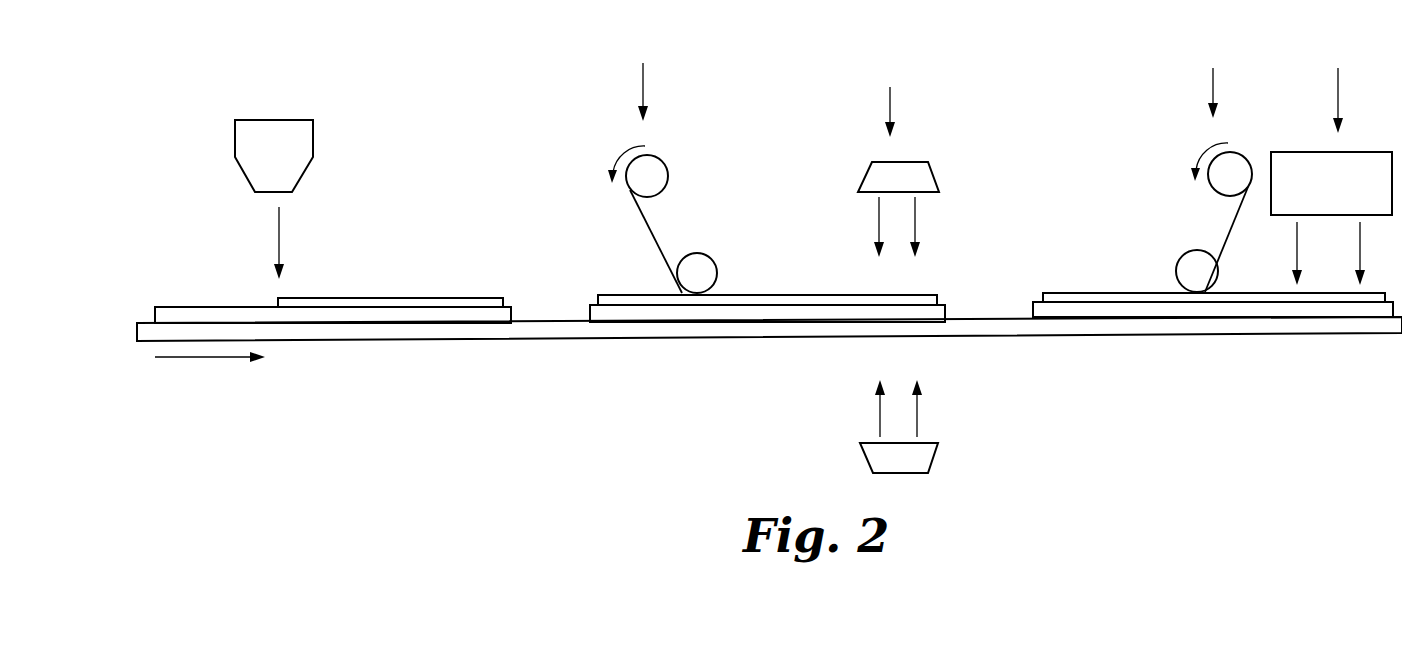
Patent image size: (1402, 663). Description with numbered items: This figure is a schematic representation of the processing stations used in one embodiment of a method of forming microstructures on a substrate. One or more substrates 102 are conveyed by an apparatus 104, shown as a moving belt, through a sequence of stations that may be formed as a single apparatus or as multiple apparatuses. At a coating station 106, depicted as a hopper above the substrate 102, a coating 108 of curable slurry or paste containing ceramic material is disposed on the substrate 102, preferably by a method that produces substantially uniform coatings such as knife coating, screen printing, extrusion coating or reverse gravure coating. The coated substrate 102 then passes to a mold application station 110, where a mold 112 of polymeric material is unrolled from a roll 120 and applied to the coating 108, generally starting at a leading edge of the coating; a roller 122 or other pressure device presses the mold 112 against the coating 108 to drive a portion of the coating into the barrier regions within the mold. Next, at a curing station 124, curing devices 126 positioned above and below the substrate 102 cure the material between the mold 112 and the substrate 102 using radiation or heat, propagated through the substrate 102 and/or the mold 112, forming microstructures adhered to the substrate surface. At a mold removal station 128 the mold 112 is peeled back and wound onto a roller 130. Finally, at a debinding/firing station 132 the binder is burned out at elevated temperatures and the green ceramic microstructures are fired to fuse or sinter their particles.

The substrate 102 is at (182, 307).
The apparatus 104 is at (397, 341).
The coating station 106 is at (283, 120).
The coating 108 is at (395, 298).
The mold application station 110 is at (644, 77).
The mold 112 is at (652, 225).
The roll 120 is at (668, 167).
The roller 122 is at (715, 260).
The curing station 124 is at (890, 98).
The curing device 126 is at (937, 182).
The mold removal station 128 is at (1214, 79).
The roller 130 is at (1238, 153).
The debinding/firing station 132 is at (1331, 162).